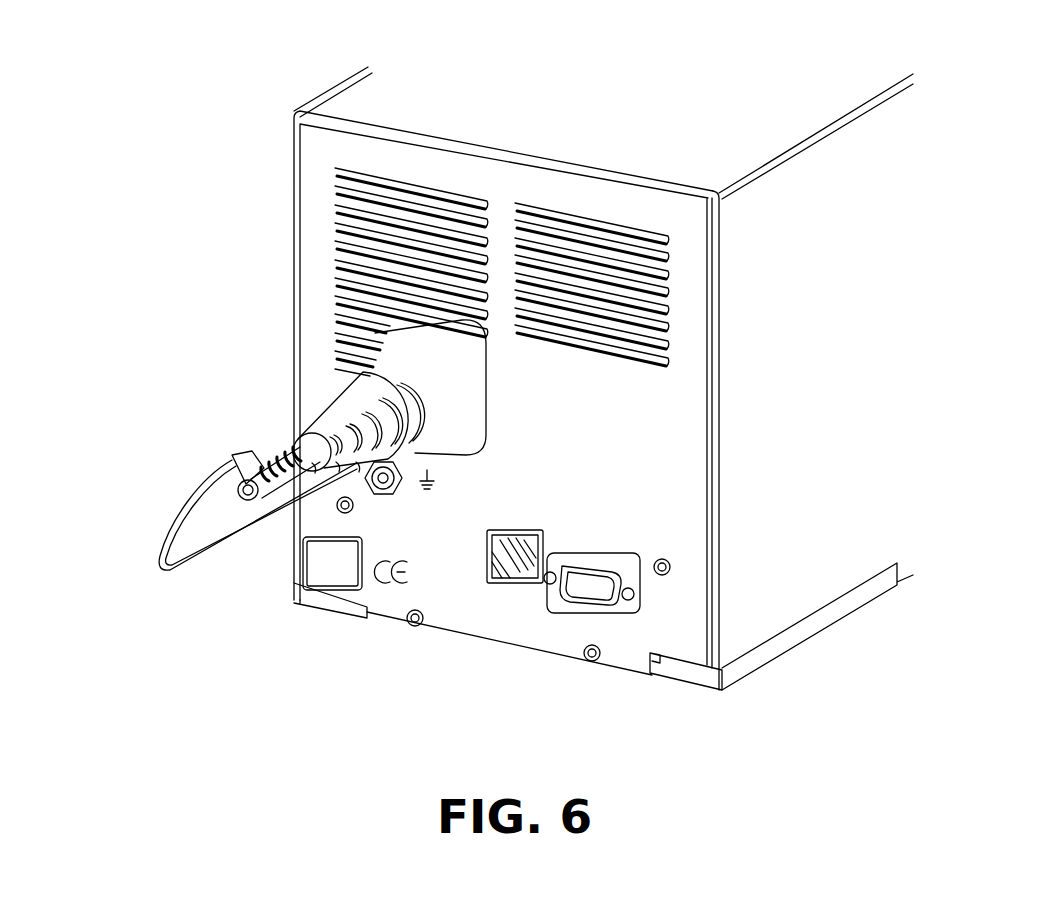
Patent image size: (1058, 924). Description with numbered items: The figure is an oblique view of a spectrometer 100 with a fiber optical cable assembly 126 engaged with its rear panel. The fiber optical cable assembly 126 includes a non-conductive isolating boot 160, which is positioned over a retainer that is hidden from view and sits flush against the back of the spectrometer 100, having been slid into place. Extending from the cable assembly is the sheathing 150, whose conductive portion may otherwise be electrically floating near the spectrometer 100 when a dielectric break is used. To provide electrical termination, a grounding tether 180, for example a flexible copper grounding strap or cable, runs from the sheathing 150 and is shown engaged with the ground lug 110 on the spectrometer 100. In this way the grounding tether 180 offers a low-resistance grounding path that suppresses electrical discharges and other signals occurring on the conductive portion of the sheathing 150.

The spectrometer 100 is at (303, 82).
The fiber optical cable assembly 126 is at (229, 349).
The isolating boot 160 is at (353, 390).
The sheathing 150 is at (250, 483).
The grounding tether 180 is at (193, 555).
The ground lug 110 is at (383, 488).